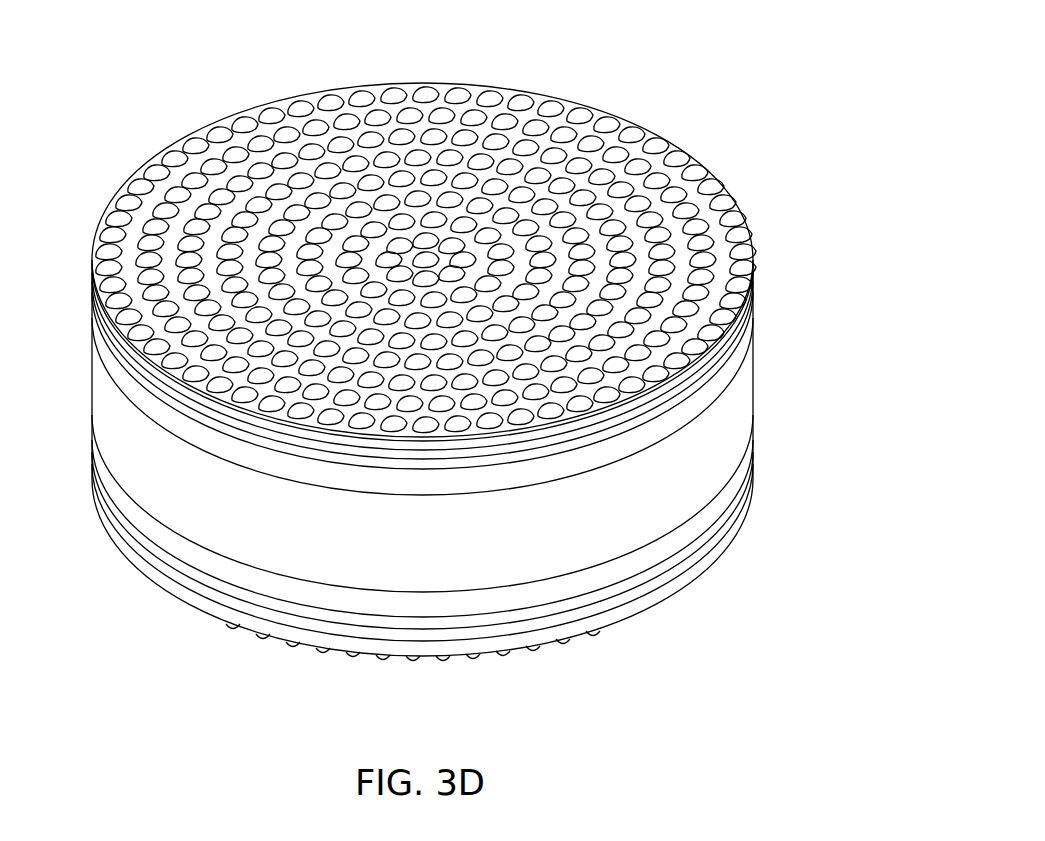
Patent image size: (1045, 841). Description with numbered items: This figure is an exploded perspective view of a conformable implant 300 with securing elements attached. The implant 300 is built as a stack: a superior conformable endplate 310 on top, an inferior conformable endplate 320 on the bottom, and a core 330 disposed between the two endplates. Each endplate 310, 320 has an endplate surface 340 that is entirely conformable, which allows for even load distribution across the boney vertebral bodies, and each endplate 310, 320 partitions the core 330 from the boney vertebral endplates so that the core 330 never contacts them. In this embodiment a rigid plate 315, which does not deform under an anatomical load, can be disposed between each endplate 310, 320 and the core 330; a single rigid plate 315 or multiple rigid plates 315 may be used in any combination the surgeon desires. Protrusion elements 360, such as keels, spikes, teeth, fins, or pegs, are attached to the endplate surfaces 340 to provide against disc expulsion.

The conformable implant 300 is at (645, 34).
The superior conformable endplate 310 is at (170, 378).
The rigid plate 315 is at (195, 420).
The inferior conformable endplate 320 is at (657, 602).
The core 330 is at (755, 396).
The endplate surface 340 is at (167, 185).
The protrusion elements 360 is at (313, 95).